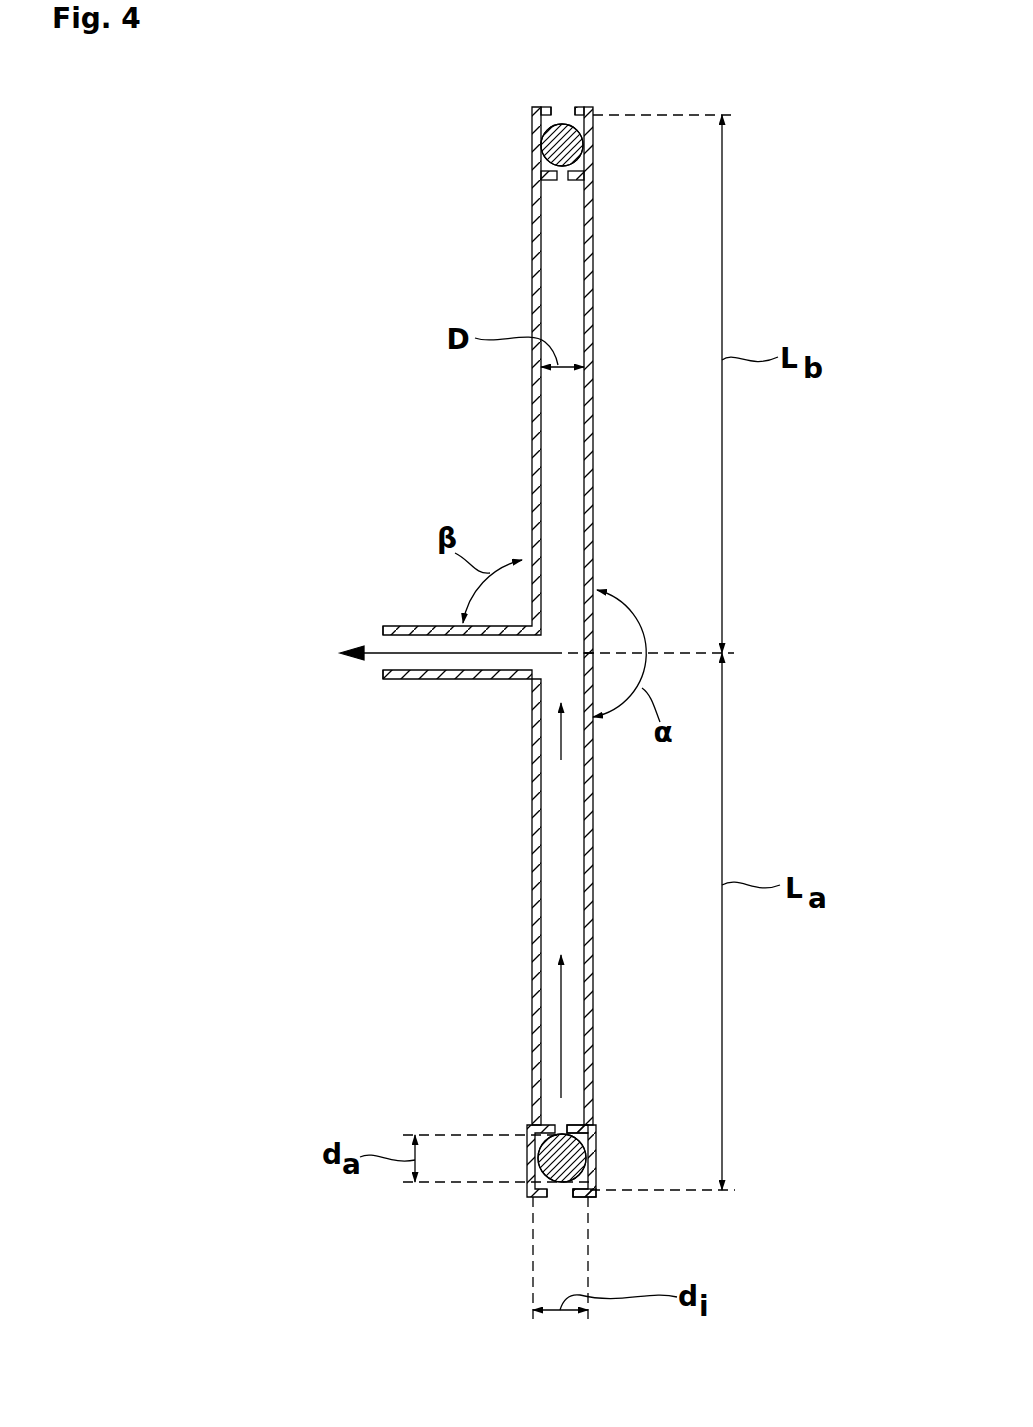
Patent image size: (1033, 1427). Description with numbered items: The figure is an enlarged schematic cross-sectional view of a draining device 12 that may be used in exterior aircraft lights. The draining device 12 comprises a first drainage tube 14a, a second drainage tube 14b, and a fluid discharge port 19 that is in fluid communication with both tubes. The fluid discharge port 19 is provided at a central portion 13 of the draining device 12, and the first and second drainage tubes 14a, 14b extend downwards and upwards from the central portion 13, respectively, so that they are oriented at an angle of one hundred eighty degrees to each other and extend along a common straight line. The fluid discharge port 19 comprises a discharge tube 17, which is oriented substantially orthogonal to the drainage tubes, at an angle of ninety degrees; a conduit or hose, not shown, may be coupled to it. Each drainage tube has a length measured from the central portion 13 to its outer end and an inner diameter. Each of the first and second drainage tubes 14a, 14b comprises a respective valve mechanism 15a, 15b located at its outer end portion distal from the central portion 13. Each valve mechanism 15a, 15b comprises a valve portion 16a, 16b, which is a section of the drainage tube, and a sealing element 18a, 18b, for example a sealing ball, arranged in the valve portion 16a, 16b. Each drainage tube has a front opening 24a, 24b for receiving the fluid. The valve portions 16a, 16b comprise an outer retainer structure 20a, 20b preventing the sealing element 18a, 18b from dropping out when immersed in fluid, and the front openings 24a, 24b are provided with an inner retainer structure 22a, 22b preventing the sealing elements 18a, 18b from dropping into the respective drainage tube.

The draining device 12 is at (363, 370).
The central portion 13 is at (593, 640).
The first drainage tube 14a is at (603, 983).
The second drainage tube 14b is at (603, 320).
The valve mechanism 15a is at (523, 1125).
The valve mechanism 15b is at (527, 177).
The valve portion 16a is at (587, 1160).
The valve portion 16b is at (584, 148).
The discharge tube 17 is at (395, 713).
The sealing element 18a is at (555, 1160).
The sealing element 18b is at (560, 148).
The fluid discharge port 19 is at (525, 687).
The outer retainer structure 20a is at (573, 1198).
The outer retainer structure 20b is at (573, 108).
The inner retainer structure 22a is at (575, 1125).
The inner retainer structure 22b is at (573, 180).
The front opening 24a is at (557, 1197).
The front opening 24b is at (558, 110).